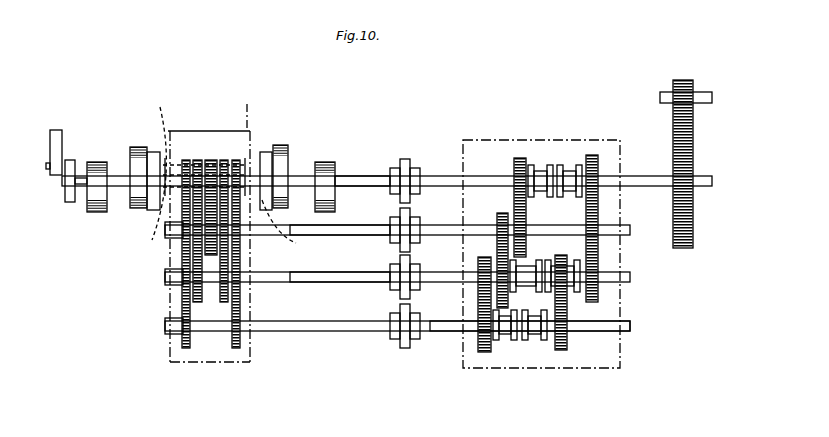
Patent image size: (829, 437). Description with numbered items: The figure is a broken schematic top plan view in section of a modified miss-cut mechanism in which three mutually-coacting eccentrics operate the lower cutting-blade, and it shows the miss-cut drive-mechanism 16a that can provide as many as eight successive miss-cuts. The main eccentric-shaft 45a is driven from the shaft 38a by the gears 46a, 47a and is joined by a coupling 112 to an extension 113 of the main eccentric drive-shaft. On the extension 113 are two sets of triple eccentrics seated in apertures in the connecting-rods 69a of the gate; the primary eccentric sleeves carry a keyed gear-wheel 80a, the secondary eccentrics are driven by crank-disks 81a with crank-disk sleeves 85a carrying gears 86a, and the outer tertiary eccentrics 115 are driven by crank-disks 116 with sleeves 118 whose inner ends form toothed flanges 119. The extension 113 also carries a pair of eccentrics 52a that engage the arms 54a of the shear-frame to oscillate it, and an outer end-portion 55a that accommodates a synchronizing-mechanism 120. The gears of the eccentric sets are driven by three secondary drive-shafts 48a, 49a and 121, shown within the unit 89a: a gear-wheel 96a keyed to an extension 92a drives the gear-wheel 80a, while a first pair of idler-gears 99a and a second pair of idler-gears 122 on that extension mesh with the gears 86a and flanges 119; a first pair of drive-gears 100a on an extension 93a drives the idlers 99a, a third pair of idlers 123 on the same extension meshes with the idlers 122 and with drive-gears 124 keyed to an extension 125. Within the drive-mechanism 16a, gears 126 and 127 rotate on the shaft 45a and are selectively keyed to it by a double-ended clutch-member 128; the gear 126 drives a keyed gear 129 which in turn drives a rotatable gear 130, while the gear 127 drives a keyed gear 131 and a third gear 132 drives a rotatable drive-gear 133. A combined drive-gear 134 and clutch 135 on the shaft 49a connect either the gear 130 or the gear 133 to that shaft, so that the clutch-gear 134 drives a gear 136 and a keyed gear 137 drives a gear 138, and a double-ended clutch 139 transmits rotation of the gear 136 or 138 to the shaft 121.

The miss-cut drive-mechanism 16a is at (567, 368).
The shaft 38a is at (703, 103).
The main eccentric-shaft 45a is at (647, 175).
The gear 46a is at (682, 80).
The gear 47a is at (685, 248).
The secondary drive-shaft 48a is at (443, 224).
The secondary drive-shaft 49a is at (438, 271).
The eccentrics 52a is at (97, 172).
The arms of the shear-frame 54a is at (95, 212).
The outer end-portion 55a is at (80, 205).
The connecting-rods 69a is at (142, 209).
The gear-wheel 80a is at (211, 160).
The crank-disk 81a is at (150, 242).
The crank-disk sleeve 85a is at (220, 166).
The gears 86a is at (225, 160).
The gear unit 89a is at (211, 363).
The extension of the secondary drive-shaft 92a is at (325, 236).
The extension of the secondary drive-shaft 93a is at (333, 283).
The gear-wheel 96a is at (209, 258).
The first pair of idler-gears 99a is at (184, 252).
The first pair of drive-gears 100a is at (224, 303).
The coupling 112 is at (404, 158).
The extension of the main eccentric drive-shaft 113 is at (370, 176).
The tertiary eccentrics 115 is at (137, 148).
The crank-disk 116 is at (155, 152).
The crank-disk sleeve 118 is at (181, 160).
The toothed flanges 119 is at (195, 160).
The synchronizing-mechanism 120 is at (65, 188).
The secondary drive-shaft 121 is at (440, 332).
The second pair of idler-gears 122 is at (194, 243).
The third pair of idlers 123 is at (183, 293).
The drive-gears 124 is at (187, 350).
The extension of the secondary drive-shaft 125 is at (317, 332).
The gear 126 is at (593, 155).
The gear 127 is at (518, 158).
The double-ended clutch-member 128 is at (547, 164).
The gear 129 is at (598, 208).
The gear 130 is at (598, 298).
The gear 131 is at (514, 206).
The third gear 132 is at (497, 219).
The drive-gear 133 is at (500, 254).
The combined drive-gear 134 is at (561, 256).
The clutch 135 is at (535, 264).
The gear 136 is at (562, 351).
The gear 137 is at (478, 289).
The gear 138 is at (485, 353).
The double-ended clutch 139 is at (511, 341).